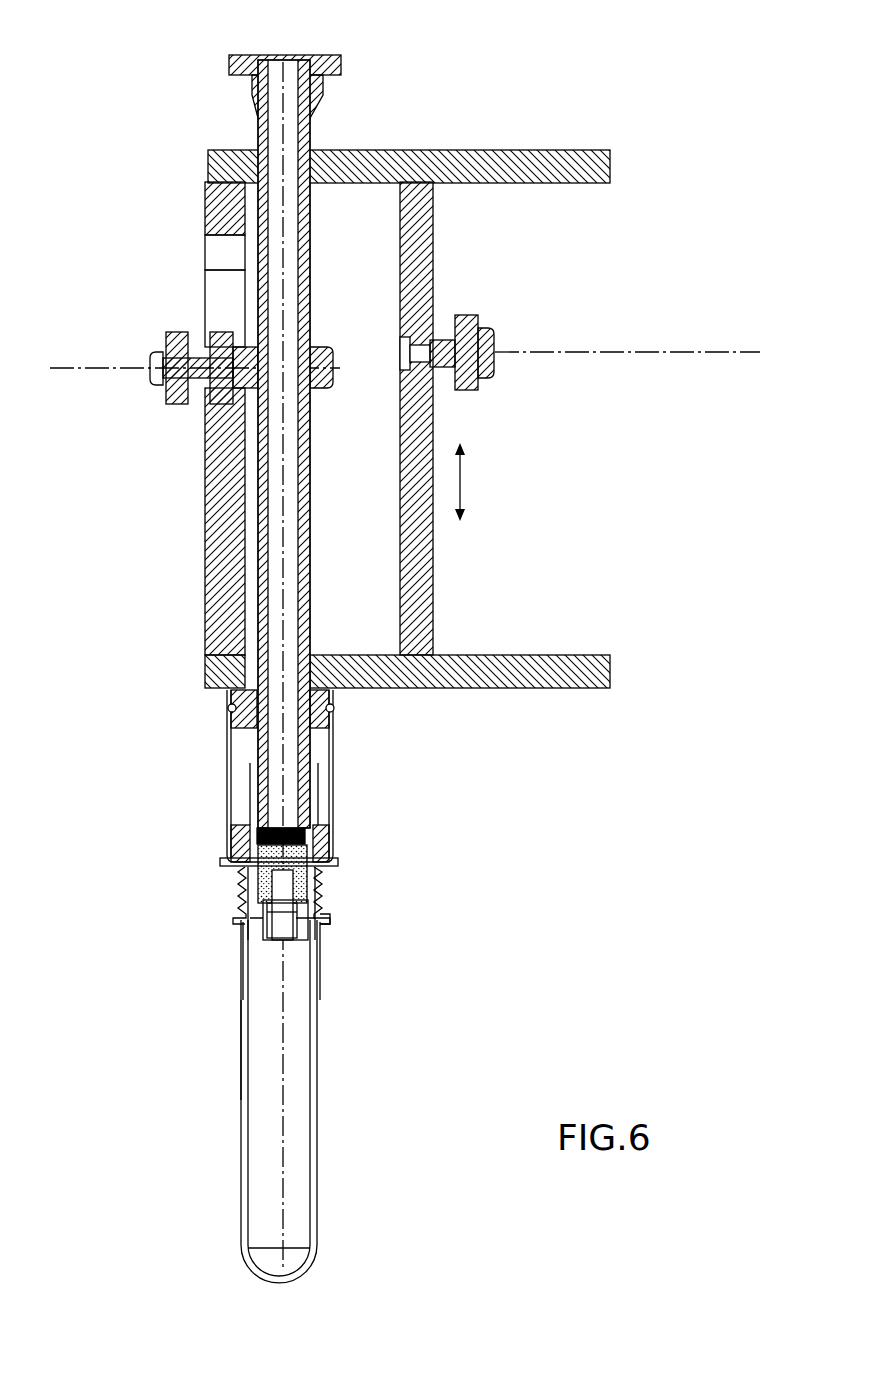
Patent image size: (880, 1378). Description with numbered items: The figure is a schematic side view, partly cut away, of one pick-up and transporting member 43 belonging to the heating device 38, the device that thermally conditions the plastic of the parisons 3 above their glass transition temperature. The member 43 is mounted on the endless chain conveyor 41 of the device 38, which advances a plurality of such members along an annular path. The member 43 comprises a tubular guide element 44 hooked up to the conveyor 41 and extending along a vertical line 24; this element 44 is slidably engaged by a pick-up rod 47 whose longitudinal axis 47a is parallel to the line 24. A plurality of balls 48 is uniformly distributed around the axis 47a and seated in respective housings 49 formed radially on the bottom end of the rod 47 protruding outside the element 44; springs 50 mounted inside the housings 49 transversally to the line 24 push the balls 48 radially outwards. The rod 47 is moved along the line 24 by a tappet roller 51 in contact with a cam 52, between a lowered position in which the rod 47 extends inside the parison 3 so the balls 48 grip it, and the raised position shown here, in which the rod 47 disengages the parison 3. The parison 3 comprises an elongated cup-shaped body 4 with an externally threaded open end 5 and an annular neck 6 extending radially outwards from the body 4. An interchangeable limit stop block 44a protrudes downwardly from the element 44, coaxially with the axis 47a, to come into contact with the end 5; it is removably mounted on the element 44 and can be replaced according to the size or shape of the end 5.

The parison 3 is at (212, 1166).
The elongated cup-shaped body 4 is at (243, 1200).
The externally threaded open end 5 is at (322, 852).
The annular neck 6 is at (332, 922).
The vertical line 24 is at (477, 482).
The heating device 38 is at (612, 112).
The endless chain conveyor 41 is at (615, 205).
The pick-up and transporting member 43 is at (340, 128).
The tubular guide element 44 is at (530, 162).
The interchangeable limit stop block 44a is at (226, 795).
The pick-up rod 47 is at (262, 562).
The longitudinal axis 47a is at (290, 55).
The balls 48 is at (258, 942).
The housings 49 is at (246, 926).
The springs 50 is at (243, 995).
The tappet roller 51 is at (205, 418).
The cam 52 is at (218, 487).